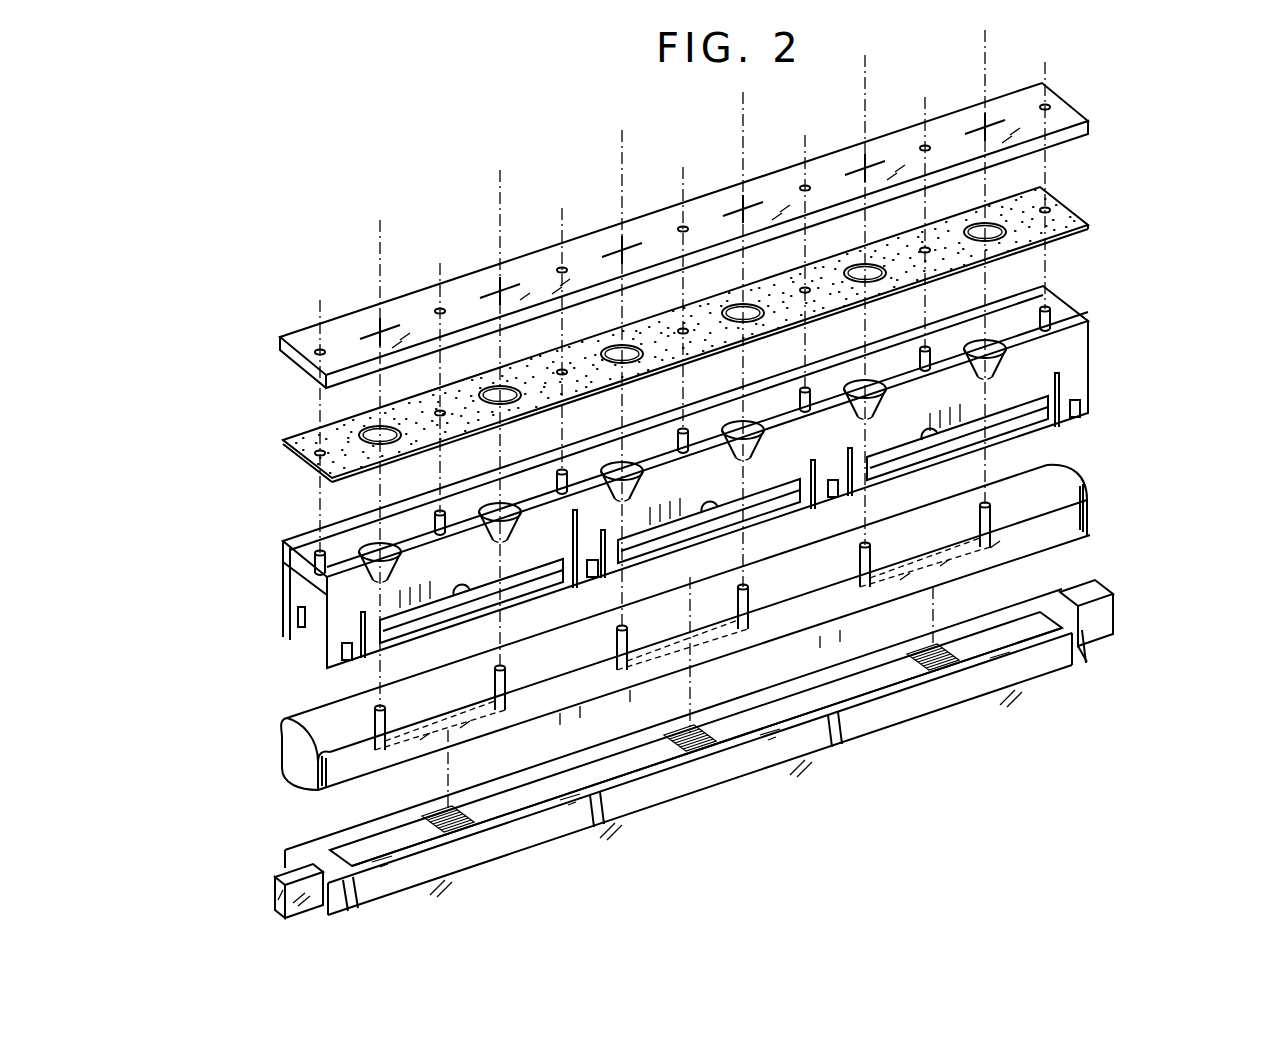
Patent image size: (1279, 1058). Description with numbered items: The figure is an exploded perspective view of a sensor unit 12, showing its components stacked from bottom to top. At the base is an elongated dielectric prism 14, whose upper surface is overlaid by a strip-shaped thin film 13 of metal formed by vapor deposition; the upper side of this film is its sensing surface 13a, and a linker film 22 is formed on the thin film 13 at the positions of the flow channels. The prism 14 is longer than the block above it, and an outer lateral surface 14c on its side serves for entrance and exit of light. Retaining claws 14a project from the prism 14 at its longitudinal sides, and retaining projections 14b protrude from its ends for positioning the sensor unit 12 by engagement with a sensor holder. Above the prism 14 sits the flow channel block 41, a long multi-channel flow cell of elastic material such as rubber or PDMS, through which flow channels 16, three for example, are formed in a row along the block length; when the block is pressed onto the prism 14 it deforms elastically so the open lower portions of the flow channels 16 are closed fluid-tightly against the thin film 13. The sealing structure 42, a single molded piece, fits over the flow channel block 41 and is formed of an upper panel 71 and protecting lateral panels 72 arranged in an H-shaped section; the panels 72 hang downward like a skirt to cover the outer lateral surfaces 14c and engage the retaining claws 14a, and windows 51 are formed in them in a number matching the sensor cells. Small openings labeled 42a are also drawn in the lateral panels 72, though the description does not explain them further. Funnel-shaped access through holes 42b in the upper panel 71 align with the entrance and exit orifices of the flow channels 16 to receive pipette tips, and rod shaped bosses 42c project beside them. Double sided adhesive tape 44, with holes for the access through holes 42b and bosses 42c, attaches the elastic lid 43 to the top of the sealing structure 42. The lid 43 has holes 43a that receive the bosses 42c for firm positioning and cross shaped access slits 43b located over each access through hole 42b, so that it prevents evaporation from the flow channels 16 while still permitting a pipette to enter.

The sensor unit 12 is at (422, 165).
The thin film 13 is at (327, 843).
The sensing surface 13a is at (635, 768).
The prism 14 is at (978, 710).
The retaining claws 14a is at (1082, 665).
The retaining projections 14b is at (1115, 600).
The outer lateral surface 14c is at (462, 862).
The flow channel 16 is at (418, 737).
The linker film 22 is at (455, 808).
The flow channel block 41 is at (1107, 486).
The sealing structure 42 is at (1222, 262).
The engaging hole 42a is at (1082, 418).
The access through hole 42b is at (990, 342).
The rod shaped bosses 42c is at (1050, 308).
The lid 43 is at (1112, 102).
The holes 43a is at (440, 308).
The cross shaped access slit 43b is at (383, 325).
The double sided adhesive tape 44 is at (1085, 205).
The windows 51 is at (460, 603).
The upper panel 71 is at (1095, 318).
The protecting lateral panels 72 is at (1092, 360).